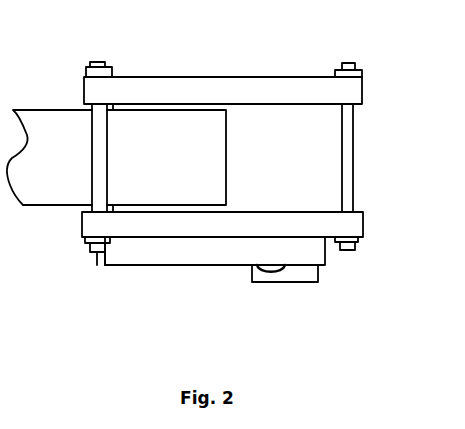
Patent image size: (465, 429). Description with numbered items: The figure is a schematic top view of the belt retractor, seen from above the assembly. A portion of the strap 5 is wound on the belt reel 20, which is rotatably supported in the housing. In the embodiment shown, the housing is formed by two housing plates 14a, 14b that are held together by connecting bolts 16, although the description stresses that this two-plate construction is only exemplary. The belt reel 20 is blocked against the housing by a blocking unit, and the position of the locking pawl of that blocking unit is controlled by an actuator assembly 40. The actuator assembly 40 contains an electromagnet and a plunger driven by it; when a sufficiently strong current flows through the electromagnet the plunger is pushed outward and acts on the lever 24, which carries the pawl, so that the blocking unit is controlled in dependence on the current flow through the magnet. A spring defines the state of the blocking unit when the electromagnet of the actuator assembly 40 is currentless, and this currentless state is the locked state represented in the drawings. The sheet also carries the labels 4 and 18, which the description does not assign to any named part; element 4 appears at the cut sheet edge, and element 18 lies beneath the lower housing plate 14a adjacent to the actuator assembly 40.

The clamping device 4 is at (4, 14).
The strap 5 is at (50, 135).
The housing plate 14a is at (187, 227).
The housing plate 14b is at (272, 87).
The connecting bolts 16 is at (350, 137).
The sensor housing 18 is at (303, 275).
The belt reel 20 is at (148, 107).
The lever 24 is at (150, 252).
The actuator assembly 40 is at (277, 277).